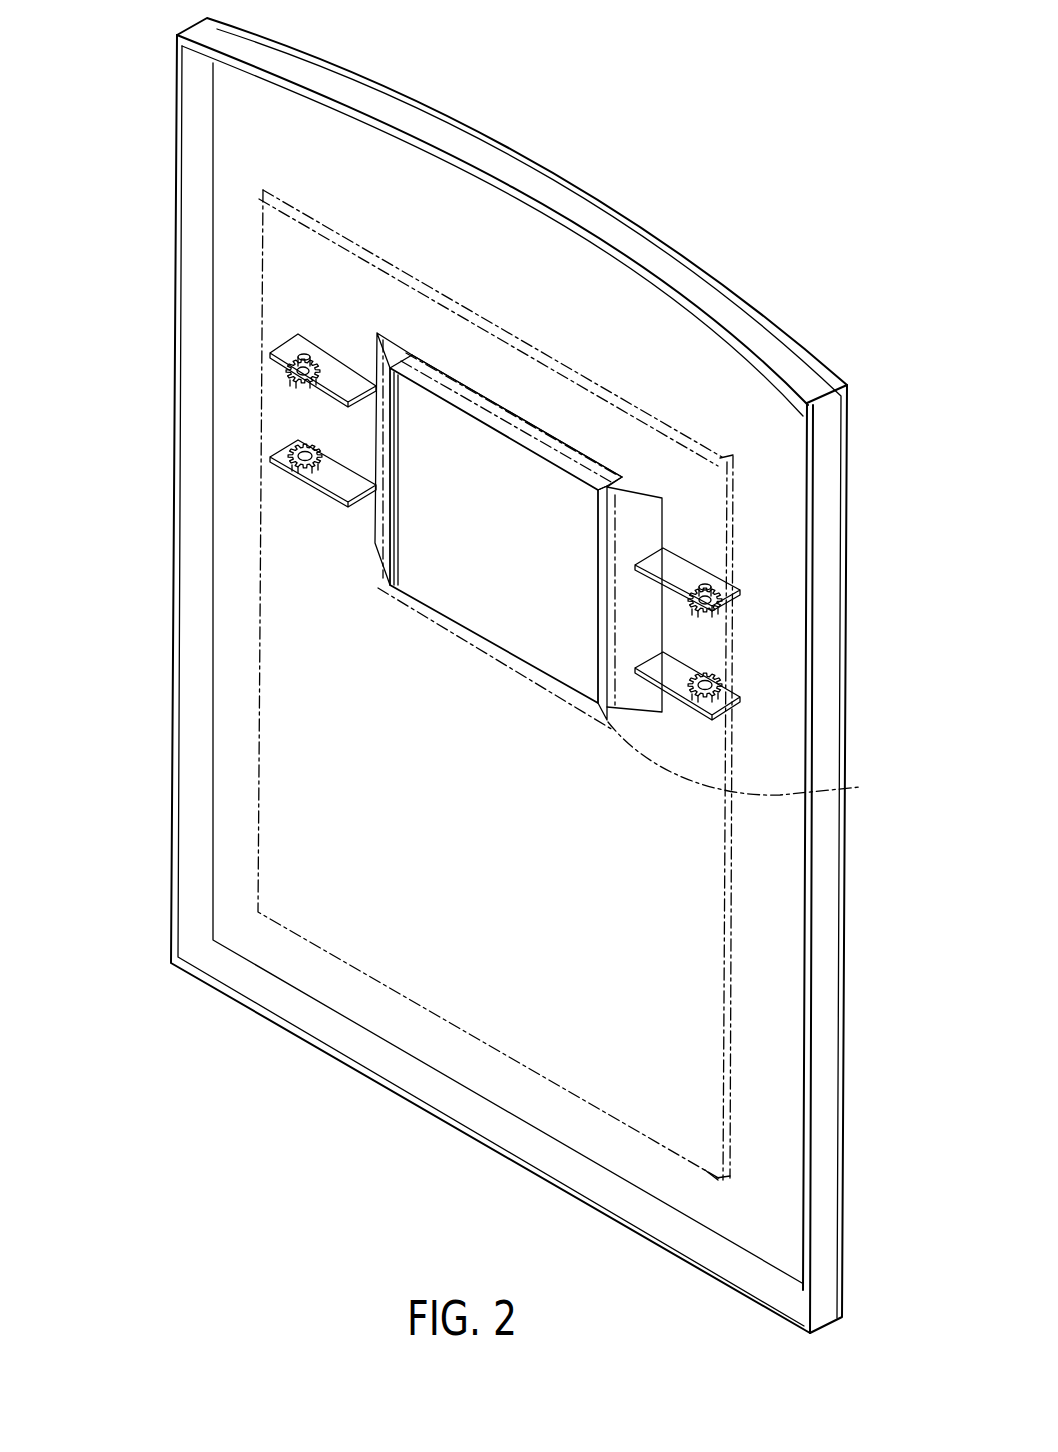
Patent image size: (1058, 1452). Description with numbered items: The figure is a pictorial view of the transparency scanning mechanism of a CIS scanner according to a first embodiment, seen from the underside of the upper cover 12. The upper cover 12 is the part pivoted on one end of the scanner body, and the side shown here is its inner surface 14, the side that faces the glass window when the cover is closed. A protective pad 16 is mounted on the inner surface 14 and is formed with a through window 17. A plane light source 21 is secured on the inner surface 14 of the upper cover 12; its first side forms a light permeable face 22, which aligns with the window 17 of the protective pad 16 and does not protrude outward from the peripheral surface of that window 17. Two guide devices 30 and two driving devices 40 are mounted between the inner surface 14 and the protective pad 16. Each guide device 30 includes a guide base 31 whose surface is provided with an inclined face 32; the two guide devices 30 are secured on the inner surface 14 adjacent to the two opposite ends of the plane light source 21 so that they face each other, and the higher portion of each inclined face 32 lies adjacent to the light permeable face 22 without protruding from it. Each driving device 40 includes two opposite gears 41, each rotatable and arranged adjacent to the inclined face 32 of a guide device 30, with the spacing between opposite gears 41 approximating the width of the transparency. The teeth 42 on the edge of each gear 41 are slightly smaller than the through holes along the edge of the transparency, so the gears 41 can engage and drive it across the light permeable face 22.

The upper cover 12 is at (830, 940).
The inner surface 14 is at (235, 207).
The protective pad 16 is at (690, 272).
The through window 17 is at (756, 817).
The plane light source 21 is at (472, 397).
The light permeable face 22 is at (562, 548).
The guide device 30 is at (387, 34).
The guide base 31 is at (398, 345).
The inclined face 32 is at (377, 333).
The driving device 40 is at (123, 377).
The gear 41 is at (292, 371).
The teeth 42 is at (720, 681).